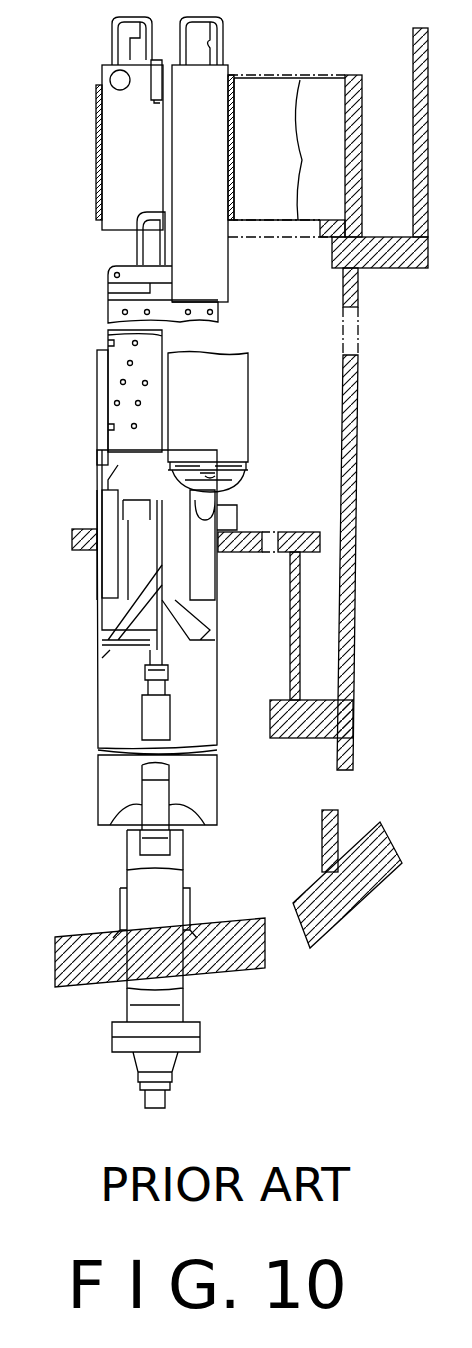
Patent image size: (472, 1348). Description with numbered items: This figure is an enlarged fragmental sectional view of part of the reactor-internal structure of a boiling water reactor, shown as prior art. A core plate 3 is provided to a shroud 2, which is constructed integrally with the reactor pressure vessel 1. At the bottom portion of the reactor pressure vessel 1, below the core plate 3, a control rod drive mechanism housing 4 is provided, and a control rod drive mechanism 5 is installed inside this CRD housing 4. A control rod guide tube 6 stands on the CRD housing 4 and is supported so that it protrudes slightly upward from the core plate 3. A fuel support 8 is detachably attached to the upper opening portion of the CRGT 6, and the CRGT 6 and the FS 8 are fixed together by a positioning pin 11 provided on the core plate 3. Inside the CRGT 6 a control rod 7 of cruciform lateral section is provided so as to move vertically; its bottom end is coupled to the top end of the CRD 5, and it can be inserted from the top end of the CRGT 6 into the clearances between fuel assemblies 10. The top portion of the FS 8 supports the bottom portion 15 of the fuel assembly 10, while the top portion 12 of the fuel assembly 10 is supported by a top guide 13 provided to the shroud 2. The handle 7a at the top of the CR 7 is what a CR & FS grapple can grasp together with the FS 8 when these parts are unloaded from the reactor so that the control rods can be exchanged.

The reactor pressure vessel 1 is at (225, 968).
The shroud 2 is at (360, 297).
The core plate 3 is at (80, 548).
The control rod drive mechanism housing 4 is at (165, 905).
The control rod drive mechanism 5 is at (172, 720).
The control rod guide tube 6 is at (98, 706).
The control rod 7 is at (110, 303).
The handle 7a is at (137, 248).
The fuel support 8 is at (97, 505).
The fuel assembly 10 is at (265, 379).
The positioning pin 11 is at (237, 517).
The top portion of the fuel assembly 12 is at (105, 75).
The top guide 13 is at (233, 152).
The bottom portion of the fuel assembly 15 is at (225, 482).